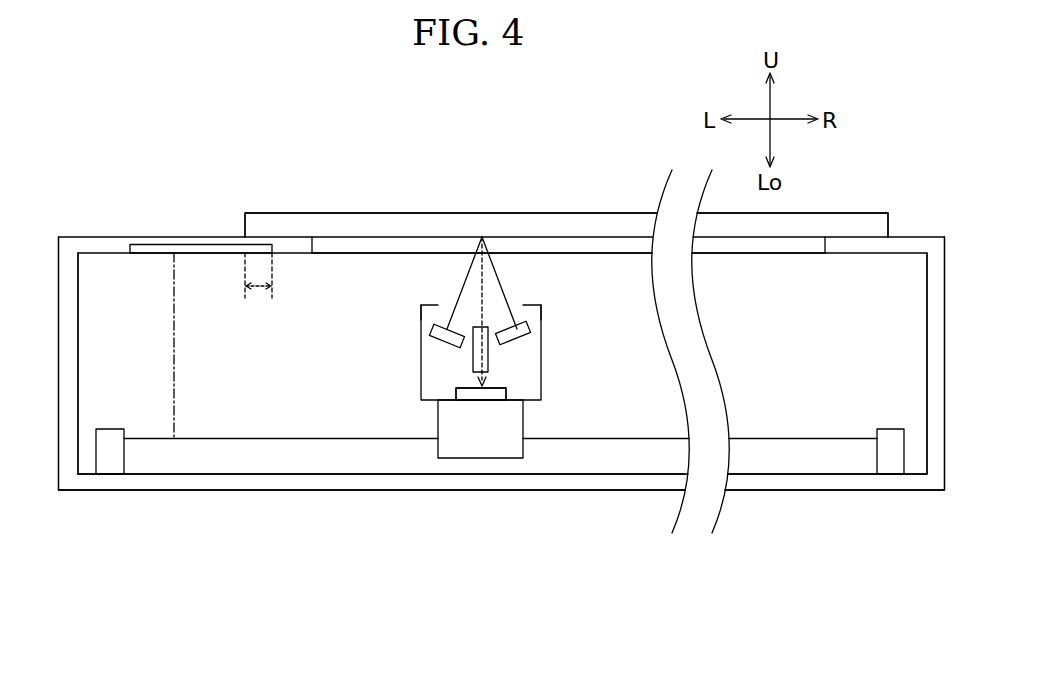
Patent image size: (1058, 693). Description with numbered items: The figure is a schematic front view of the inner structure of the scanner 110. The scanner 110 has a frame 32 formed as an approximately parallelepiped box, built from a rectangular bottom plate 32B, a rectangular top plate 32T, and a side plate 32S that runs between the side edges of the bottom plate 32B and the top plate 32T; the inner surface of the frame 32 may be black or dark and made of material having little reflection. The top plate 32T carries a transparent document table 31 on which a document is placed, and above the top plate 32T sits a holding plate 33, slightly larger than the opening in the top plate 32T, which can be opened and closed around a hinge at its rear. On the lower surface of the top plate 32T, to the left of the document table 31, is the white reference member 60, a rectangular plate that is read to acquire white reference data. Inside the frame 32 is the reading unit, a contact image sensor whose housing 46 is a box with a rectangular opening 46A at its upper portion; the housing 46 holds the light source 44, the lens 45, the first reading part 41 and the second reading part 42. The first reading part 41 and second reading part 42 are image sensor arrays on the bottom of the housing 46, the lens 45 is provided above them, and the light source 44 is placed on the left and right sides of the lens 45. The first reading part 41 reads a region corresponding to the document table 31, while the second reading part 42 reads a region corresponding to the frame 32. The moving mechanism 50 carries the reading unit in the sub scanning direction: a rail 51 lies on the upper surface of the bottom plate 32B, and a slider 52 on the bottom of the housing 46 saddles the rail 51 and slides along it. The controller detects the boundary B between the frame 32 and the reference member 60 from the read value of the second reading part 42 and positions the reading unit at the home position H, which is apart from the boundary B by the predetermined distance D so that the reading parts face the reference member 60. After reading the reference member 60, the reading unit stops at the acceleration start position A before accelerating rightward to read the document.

The scanner 110 is at (880, 128).
The holding plate 33 is at (858, 213).
The top plate 32T is at (912, 237).
The bottom plate 32B is at (848, 492).
The side plate 32S is at (55, 450).
The frame 32 is at (793, 494).
The document table 31 is at (780, 256).
The reference member 60 is at (190, 257).
The light source 44 is at (422, 330).
The lens 45 is at (490, 365).
The housing 46 is at (545, 307).
The opening 46A is at (521, 305).
The first reading part 41 is at (507, 393).
The second reading part 42 is at (481, 394).
The moving mechanism 50 is at (500, 423).
The rail 51 is at (772, 438).
The slider 52 is at (523, 428).
The acceleration start position A is at (173, 263).
The home position H is at (245, 263).
The boundary B is at (272, 263).
The predetermined distance D is at (258, 299).